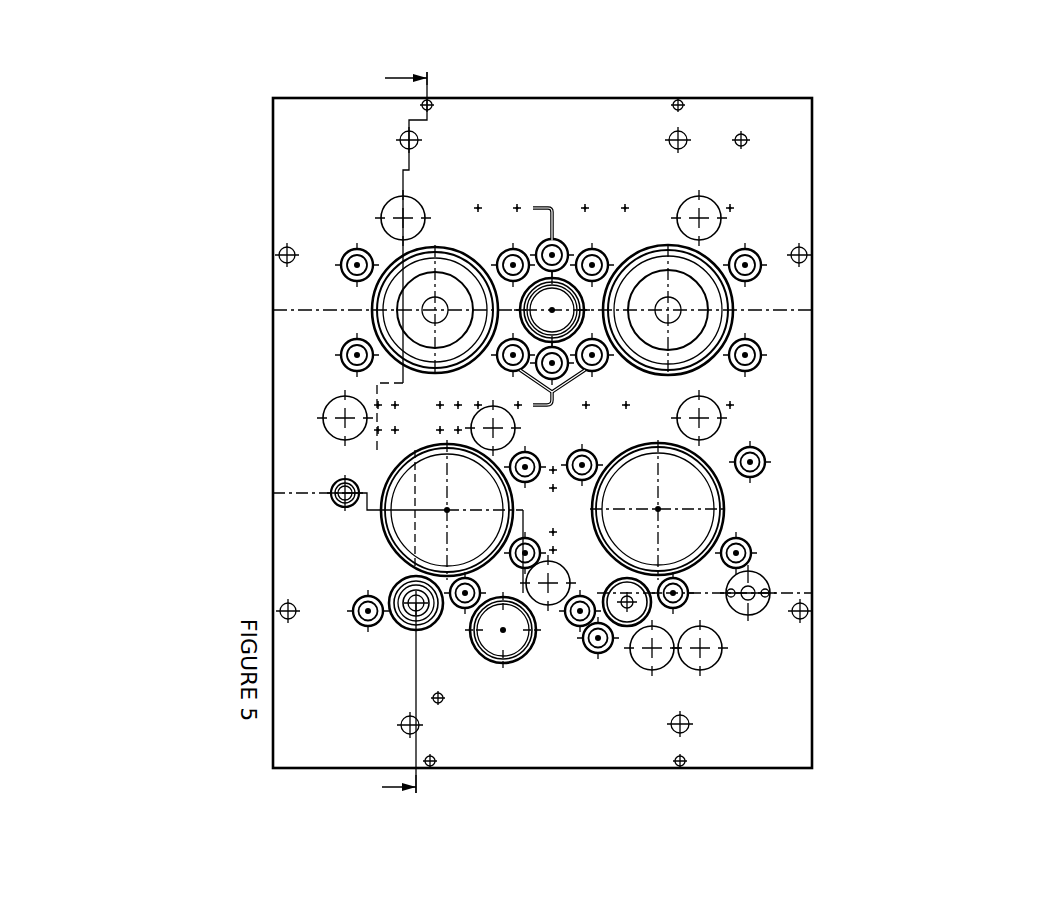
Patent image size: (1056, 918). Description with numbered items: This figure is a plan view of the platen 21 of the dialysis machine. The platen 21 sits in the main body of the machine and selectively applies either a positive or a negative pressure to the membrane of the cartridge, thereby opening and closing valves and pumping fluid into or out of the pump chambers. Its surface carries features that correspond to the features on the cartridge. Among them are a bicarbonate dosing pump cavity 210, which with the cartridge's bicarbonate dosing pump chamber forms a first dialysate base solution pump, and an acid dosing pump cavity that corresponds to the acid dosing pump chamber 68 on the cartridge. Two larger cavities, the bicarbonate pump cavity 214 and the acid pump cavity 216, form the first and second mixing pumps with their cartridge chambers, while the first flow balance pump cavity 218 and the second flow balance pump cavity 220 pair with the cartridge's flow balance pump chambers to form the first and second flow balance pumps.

The platen 21 is at (770, 131).
The second flow balance pump cavity 220 is at (393, 300).
The first flow balance pump cavity 218 is at (695, 300).
The acid pump cavity 216 is at (407, 500).
The bicarbonate pump cavity 214 is at (685, 488).
The bicarbonate dosing pump cavity 210 is at (630, 612).
The acid dosing pump chamber 68 is at (410, 618).